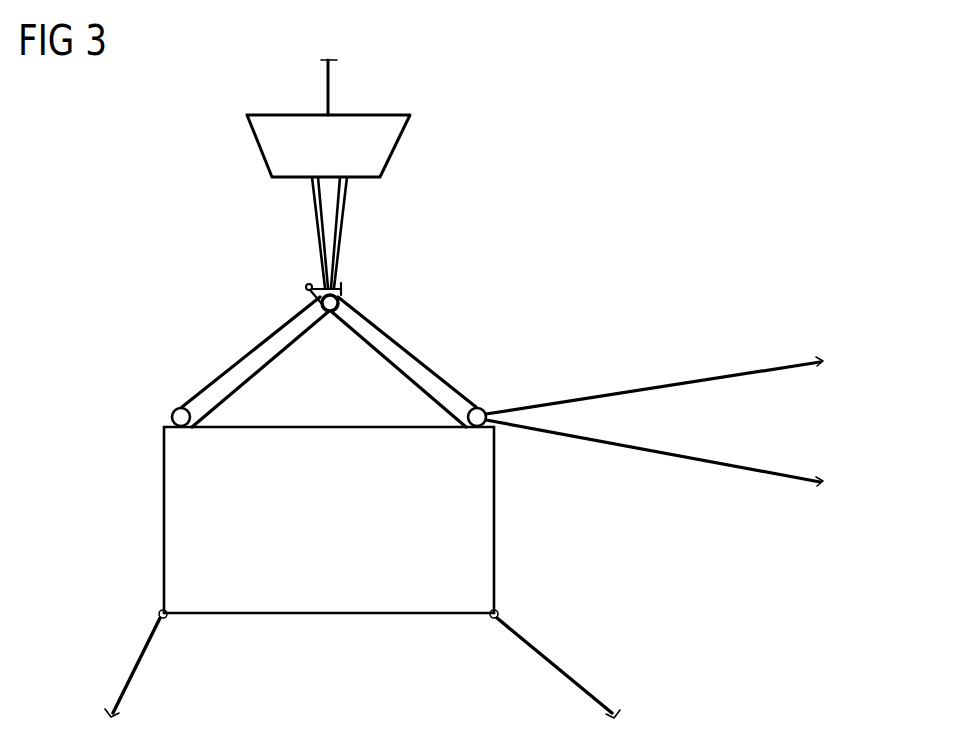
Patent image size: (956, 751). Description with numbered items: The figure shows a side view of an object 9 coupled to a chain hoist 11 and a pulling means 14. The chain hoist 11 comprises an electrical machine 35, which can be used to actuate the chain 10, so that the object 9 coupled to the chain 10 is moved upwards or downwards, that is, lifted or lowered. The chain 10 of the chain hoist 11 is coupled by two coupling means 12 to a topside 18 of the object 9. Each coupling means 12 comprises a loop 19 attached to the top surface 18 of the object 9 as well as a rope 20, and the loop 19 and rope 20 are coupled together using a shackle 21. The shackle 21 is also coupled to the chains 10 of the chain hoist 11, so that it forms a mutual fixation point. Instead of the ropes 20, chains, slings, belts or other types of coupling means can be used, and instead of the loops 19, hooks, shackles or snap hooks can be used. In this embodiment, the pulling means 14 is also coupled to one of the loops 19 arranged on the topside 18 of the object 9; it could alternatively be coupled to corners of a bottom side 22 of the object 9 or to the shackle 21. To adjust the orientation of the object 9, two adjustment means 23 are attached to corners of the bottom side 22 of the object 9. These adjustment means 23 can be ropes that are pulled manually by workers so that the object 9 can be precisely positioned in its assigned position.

The object 9 is at (273, 598).
The chain 10 is at (346, 230).
The chain hoist 11 is at (440, 112).
The coupling means 12 is at (328, 88).
The pulling means 14 is at (660, 385).
The topside 18 is at (320, 426).
The loop 19 is at (172, 412).
The rope 20 is at (233, 366).
The shackle 21 is at (345, 289).
The bottom side 22 is at (353, 614).
The adjustment means 23 is at (135, 665).
The electrical machine 35 is at (392, 158).